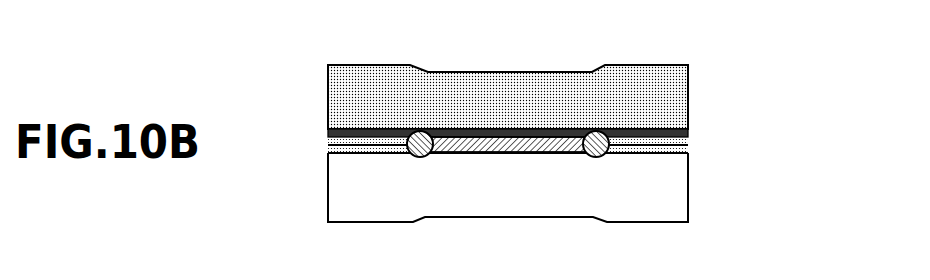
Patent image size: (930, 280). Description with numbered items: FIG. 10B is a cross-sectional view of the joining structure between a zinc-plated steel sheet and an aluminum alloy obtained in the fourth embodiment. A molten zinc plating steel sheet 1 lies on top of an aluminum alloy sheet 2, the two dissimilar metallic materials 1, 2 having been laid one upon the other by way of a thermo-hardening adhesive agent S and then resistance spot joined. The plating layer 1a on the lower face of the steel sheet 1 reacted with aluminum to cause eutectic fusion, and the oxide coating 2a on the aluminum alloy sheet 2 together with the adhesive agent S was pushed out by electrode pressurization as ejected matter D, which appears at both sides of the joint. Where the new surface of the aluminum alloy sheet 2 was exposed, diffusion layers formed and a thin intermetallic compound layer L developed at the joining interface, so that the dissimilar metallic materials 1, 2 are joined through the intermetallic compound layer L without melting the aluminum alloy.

The steel sheet 1 is at (338, 106).
The electrode of first substrate 1a is at (328, 134).
The aluminum alloy sheet 2 is at (649, 210).
The oxide coating 2a is at (670, 157).
The intermetallic compound layer L is at (545, 139).
The adhesive agent S is at (689, 146).
The ejected matter D is at (421, 157).